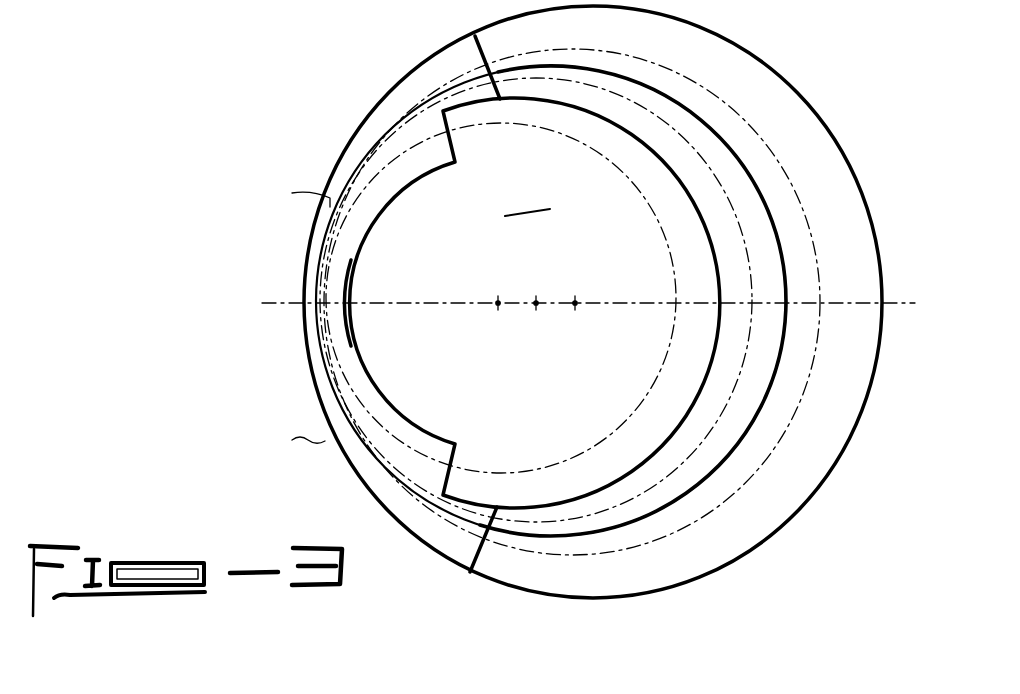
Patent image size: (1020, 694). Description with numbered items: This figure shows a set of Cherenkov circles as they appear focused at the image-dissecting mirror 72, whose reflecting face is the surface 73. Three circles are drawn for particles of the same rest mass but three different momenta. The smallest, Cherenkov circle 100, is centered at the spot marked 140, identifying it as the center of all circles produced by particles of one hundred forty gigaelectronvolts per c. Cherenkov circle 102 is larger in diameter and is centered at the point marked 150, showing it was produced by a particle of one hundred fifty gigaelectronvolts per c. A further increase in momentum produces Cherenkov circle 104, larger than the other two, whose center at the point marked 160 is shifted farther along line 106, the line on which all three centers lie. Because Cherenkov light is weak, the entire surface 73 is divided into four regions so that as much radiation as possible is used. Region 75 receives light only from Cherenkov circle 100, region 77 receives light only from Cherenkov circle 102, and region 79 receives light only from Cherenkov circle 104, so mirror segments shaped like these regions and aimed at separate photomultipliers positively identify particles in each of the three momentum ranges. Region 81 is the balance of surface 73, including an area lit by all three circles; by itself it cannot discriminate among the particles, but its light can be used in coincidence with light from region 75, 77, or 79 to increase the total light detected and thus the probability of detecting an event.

The image-dissecting mirror 72 is at (334, 441).
The surface 73 is at (738, 62).
The region 75 is at (527, 201).
The region 77 is at (772, 283).
The region 79 is at (836, 386).
The region 81 is at (330, 207).
The Cherenkov circle 100 is at (578, 442).
The Cherenkov circle 102 is at (733, 393).
The Cherenkov circle 104 is at (645, 58).
The line 106 is at (365, 303).
The center spot for 140 GeV/c 140 is at (496, 305).
The center point for 150 GeV/c 150 is at (535, 301).
The center point for 160 GeV/c 160 is at (574, 305).